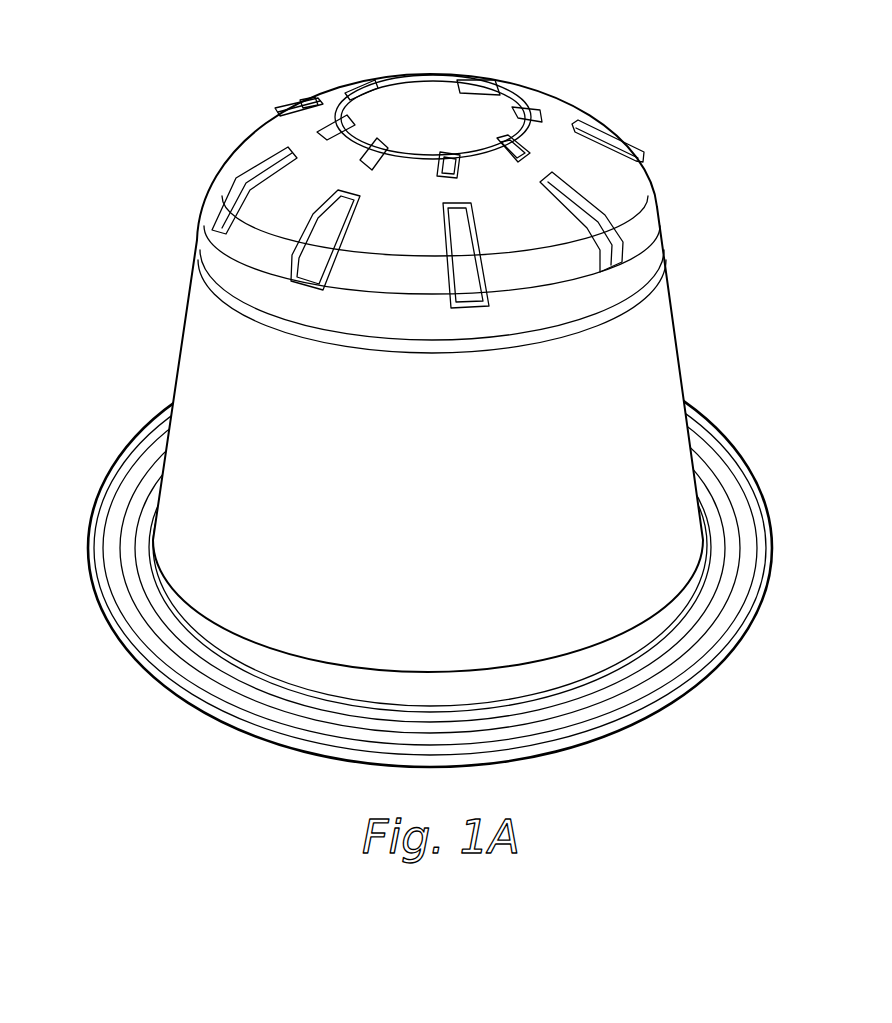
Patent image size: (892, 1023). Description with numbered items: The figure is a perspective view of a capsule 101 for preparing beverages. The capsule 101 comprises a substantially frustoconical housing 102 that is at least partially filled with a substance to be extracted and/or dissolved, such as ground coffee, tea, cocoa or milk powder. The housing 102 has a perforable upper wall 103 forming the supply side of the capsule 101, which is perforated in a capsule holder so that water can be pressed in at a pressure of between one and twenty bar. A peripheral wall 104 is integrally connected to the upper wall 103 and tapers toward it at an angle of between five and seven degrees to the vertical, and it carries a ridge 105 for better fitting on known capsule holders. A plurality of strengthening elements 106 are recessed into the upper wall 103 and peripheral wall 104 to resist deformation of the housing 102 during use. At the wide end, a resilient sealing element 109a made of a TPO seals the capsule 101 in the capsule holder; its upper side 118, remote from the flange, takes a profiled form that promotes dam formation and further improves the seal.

The capsule 101 is at (175, 117).
The housing 102 is at (173, 327).
The upper wall 103 is at (470, 98).
The peripheral wall 104 is at (646, 388).
The ridge 105 is at (367, 347).
The strengthening elements 106 is at (501, 139).
The sealing element 109a is at (434, 742).
The upper side of sealing element 118 is at (430, 548).